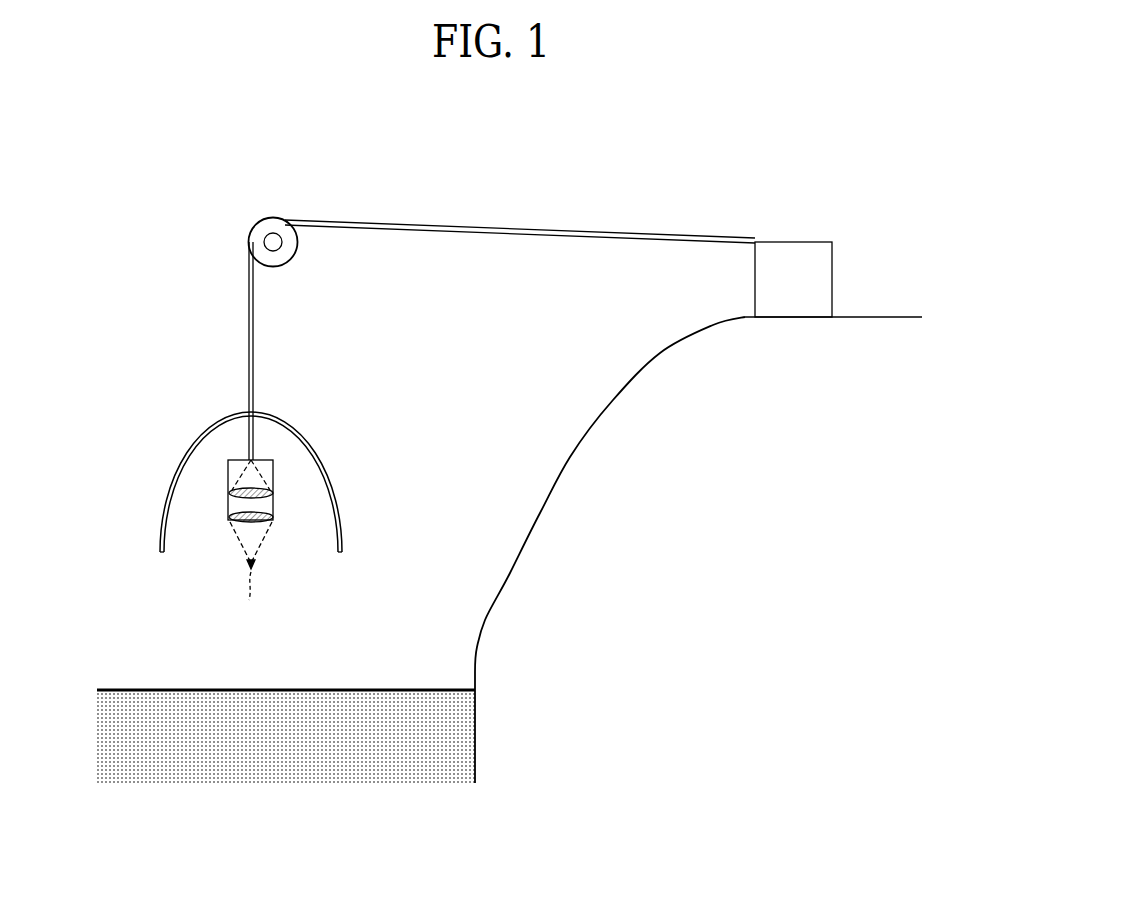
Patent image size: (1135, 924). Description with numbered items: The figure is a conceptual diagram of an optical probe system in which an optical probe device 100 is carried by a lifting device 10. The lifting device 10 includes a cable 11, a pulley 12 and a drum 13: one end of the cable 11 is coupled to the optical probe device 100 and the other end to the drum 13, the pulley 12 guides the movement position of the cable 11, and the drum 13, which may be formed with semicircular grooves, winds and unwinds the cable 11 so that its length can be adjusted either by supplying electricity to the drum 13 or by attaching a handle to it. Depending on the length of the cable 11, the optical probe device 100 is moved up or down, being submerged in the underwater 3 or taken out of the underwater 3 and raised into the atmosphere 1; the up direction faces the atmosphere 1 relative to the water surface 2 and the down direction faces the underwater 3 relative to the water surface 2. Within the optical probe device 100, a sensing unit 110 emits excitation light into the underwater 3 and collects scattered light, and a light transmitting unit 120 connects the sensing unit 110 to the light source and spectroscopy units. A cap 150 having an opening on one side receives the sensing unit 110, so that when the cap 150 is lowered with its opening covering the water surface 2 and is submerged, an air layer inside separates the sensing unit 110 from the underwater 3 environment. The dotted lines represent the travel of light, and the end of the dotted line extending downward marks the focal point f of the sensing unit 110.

The atmosphere 1 is at (184, 641).
The water surface 2 is at (115, 688).
The underwater 3 is at (147, 728).
The lifting device 10 is at (551, 323).
The cable 11 is at (248, 300).
The pulley 12 is at (252, 232).
The drum 13 is at (818, 283).
The optical probe device 100 is at (254, 493).
The sensing unit 110 is at (265, 505).
The light transmitting unit 120 is at (256, 432).
The cap 150 is at (336, 492).
The focal point f is at (249, 596).